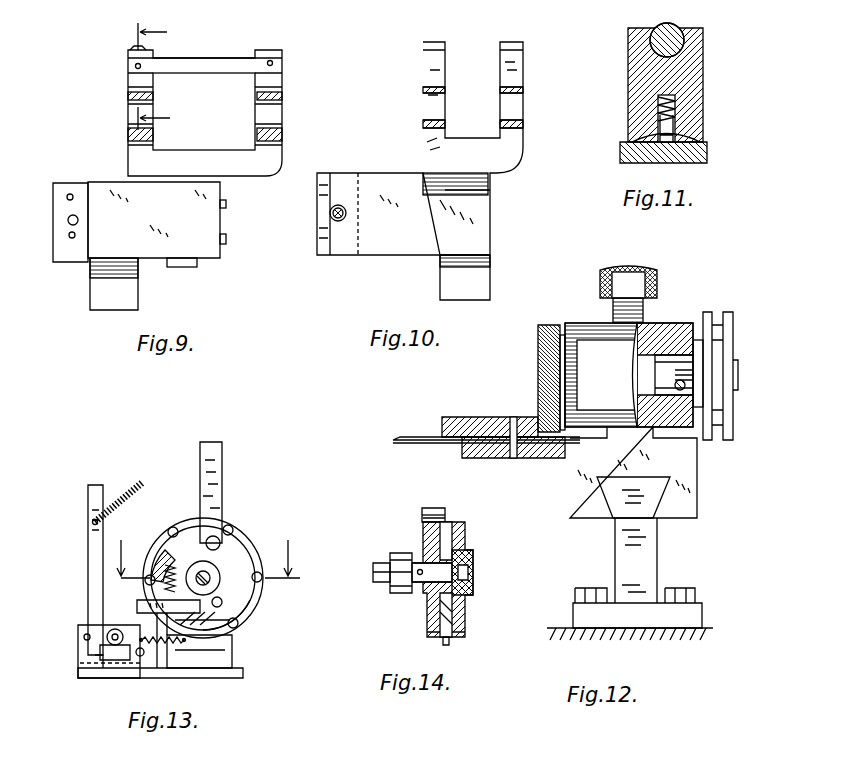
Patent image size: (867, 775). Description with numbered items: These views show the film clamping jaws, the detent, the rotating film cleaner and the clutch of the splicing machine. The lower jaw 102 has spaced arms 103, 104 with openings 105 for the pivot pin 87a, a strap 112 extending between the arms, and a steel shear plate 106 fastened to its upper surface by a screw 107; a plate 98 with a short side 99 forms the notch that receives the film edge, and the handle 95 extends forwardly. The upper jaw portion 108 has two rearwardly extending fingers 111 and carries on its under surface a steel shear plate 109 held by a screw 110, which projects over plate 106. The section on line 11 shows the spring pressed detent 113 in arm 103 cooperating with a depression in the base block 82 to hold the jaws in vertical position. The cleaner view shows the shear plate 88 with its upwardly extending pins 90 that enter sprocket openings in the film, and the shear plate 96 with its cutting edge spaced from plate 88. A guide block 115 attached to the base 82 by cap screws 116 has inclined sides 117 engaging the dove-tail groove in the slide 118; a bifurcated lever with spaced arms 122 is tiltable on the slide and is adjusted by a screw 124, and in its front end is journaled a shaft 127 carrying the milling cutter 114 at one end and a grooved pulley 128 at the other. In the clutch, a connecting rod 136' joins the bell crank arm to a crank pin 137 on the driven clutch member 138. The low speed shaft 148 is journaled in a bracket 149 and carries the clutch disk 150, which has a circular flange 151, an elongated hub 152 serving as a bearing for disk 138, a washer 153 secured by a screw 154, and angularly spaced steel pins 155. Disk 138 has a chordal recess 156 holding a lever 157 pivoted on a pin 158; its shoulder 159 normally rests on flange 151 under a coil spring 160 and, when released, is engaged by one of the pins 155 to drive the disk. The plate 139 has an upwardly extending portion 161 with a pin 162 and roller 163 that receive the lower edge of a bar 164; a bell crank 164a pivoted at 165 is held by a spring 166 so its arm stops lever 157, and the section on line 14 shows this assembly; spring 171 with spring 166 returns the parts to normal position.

In FIG. 9, the section line 11— 11 is at (164, 76).
In FIG. 13, the section line 14— 14 is at (207, 558).
In FIG. 11, the block 82 is at (702, 153).
In FIG. 12, the block 82 is at (706, 627).
In FIG. 11, the pivot pin 87a is at (675, 27).
In FIG. 12, the steel shear plate 88 is at (462, 455).
In FIG. 9, the pins 90 is at (69, 235).
In FIG. 12, the pins 90 is at (513, 458).
In FIG. 9, the handle 95 is at (143, 284).
In FIG. 10, the handle 95 is at (465, 273).
In FIG. 12, the steel shear plate 96 is at (458, 418).
In FIG. 9, the plate 98 is at (227, 209).
In FIG. 9, the short side 99 is at (227, 238).
In FIG. 9, the lower jaw 102 is at (154, 220).
In FIG. 9, the arm 103 is at (132, 86).
In FIG. 11, the arm 103 is at (703, 90).
In FIG. 9, the arm 104 is at (278, 86).
In FIG. 9, the openings 105 is at (130, 124).
In FIG. 10, the openings 105 is at (518, 105).
In FIG. 9, the steel shear plate 106 is at (60, 197).
In FIG. 9, the screw 107 is at (79, 219).
In FIG. 10, the jaw portion 108 is at (420, 171).
In FIG. 10, the steel shear plate 109 is at (322, 229).
In FIG. 10, the screw 110 is at (347, 213).
In FIG. 10, the fingers 111 is at (500, 60).
In FIG. 9, the strap 112 is at (205, 62).
In FIG. 9, the spring pressed detent 113 is at (133, 47).
In FIG. 11, the spring pressed detent 113 is at (666, 144).
In FIG. 12, the rotating cleaner 114 is at (540, 348).
In FIG. 12, the guide block 115 is at (657, 554).
In FIG. 12, the cap screws 116 is at (695, 594).
In FIG. 12, the inclined sides 117 is at (650, 497).
In FIG. 12, the slide 118 is at (633, 472).
In FIG. 12, the arms 122 is at (629, 375).
In FIG. 12, the screw 124 is at (652, 275).
In FIG. 12, the shaft 127 is at (648, 372).
In FIG. 12, the grooved pulley 128 is at (726, 330).
In FIG. 13, the connecting rod 136' is at (228, 492).
In FIG. 13, the crank pin 137 is at (221, 541).
In FIG. 13, the clutch member 138 is at (222, 604).
In FIG. 13, the plate 139 is at (243, 676).
In FIG. 14, the shaft 148 is at (376, 565).
In FIG. 13, the bracket 149 is at (232, 655).
In FIG. 14, the bracket 149 is at (398, 553).
In FIG. 13, the clutch disk 150 is at (178, 527).
In FIG. 14, the clutch disk 150 is at (430, 620).
In FIG. 13, the circular flange 151 is at (262, 593).
In FIG. 14, the circular flange 151 is at (440, 509).
In FIG. 14, the elongated hub 152 is at (460, 545).
In FIG. 13, the washer 153 is at (196, 570).
In FIG. 14, the washer 153 is at (465, 587).
In FIG. 14, the screw 154 is at (470, 570).
In FIG. 13, the steel pins 155 is at (169, 529).
In FIG. 14, the steel pins 155 is at (446, 517).
In FIG. 13, the recess 156 is at (168, 650).
In FIG. 13, the lever 157 is at (137, 606).
In FIG. 14, the lever 157 is at (450, 640).
In FIG. 13, the pivot pin 158 is at (238, 626).
In FIG. 14, the shoulder 159 is at (455, 612).
In FIG. 13, the coil spring 160 is at (150, 590).
In FIG. 13, the upwardly extending portion 161 is at (85, 668).
In FIG. 13, the pin 162 is at (84, 636).
In FIG. 13, the roller 163 is at (107, 641).
In FIG. 13, the bar 164 is at (88, 560).
In FIG. 13, the bell crank 164a is at (118, 660).
In FIG. 13, the pivot 165 is at (140, 657).
In FIG. 13, the spring 166 is at (163, 668).
In FIG. 13, the spring 171 is at (123, 495).